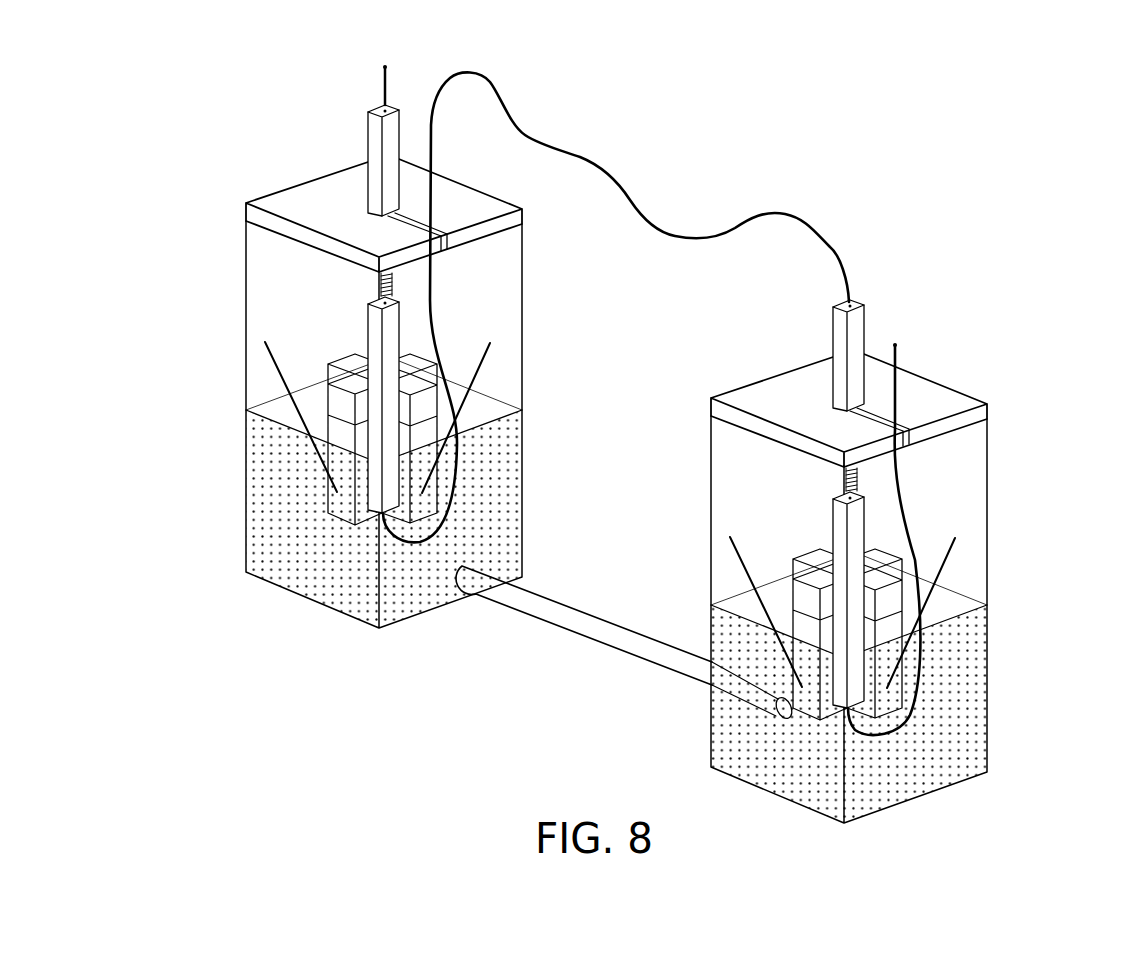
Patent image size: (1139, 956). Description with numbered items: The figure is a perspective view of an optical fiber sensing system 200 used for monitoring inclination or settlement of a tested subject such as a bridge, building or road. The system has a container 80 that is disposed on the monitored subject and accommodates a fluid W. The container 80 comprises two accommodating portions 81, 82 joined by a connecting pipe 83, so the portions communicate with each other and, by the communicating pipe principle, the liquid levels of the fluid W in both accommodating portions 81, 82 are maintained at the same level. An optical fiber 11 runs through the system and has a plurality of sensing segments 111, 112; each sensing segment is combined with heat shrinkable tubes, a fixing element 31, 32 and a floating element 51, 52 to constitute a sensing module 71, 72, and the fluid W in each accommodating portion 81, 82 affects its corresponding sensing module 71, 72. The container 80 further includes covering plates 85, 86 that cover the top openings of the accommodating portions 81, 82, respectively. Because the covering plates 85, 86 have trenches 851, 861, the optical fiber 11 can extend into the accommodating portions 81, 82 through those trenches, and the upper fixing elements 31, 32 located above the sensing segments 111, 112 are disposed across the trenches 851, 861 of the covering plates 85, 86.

The optical fiber sensing system 200 is at (1123, 110).
The optical fiber 11 is at (767, 213).
The fixing element 31 is at (373, 147).
The fixing element 32 is at (858, 338).
The floating element 51 is at (338, 398).
The floating element 52 is at (902, 567).
The sensing module 71 is at (358, 82).
The sensing module 72 is at (978, 375).
The container 80 is at (462, 690).
The accommodating portion 81 is at (320, 597).
The accommodating portion 82 is at (913, 783).
The connecting pipe 83 is at (570, 630).
The covering plate 85 is at (246, 208).
The covering plate 86 is at (717, 407).
The trench 851 is at (447, 242).
The trench 861 is at (907, 435).
The sensing segment 111 is at (380, 278).
The sensing segment 112 is at (843, 472).
The fluid W is at (252, 475).